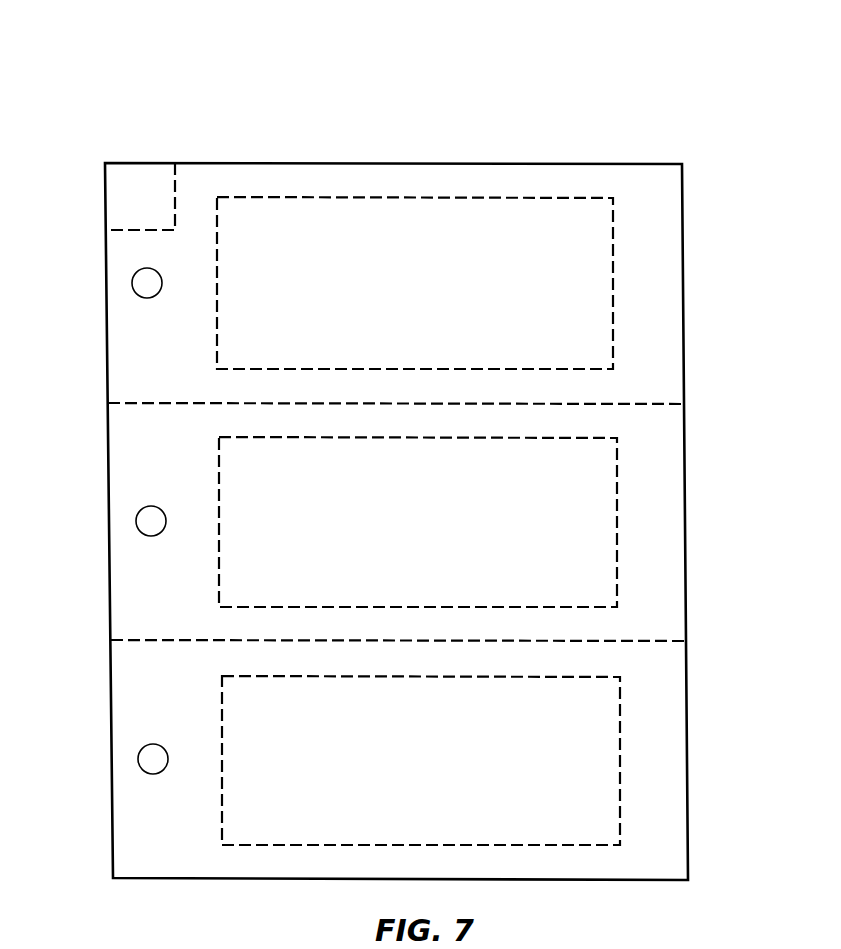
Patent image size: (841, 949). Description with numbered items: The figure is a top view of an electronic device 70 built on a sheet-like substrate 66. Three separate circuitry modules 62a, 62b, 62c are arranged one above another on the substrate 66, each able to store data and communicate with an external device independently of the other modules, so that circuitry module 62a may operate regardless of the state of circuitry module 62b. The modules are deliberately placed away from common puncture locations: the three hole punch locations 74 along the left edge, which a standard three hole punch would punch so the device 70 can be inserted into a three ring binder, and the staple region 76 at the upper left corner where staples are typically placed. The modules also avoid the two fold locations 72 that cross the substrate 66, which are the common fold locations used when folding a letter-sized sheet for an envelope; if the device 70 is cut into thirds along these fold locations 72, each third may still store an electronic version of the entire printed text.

The electronic device 70 is at (110, 95).
The substrate 66 is at (162, 822).
The staple region 76 is at (178, 188).
The fold locations 72 is at (626, 404).
The hole punch locations 74 is at (132, 287).
The circuitry module 62a is at (431, 289).
The circuitry module 62b is at (434, 534).
The circuitry module 62c is at (436, 773).